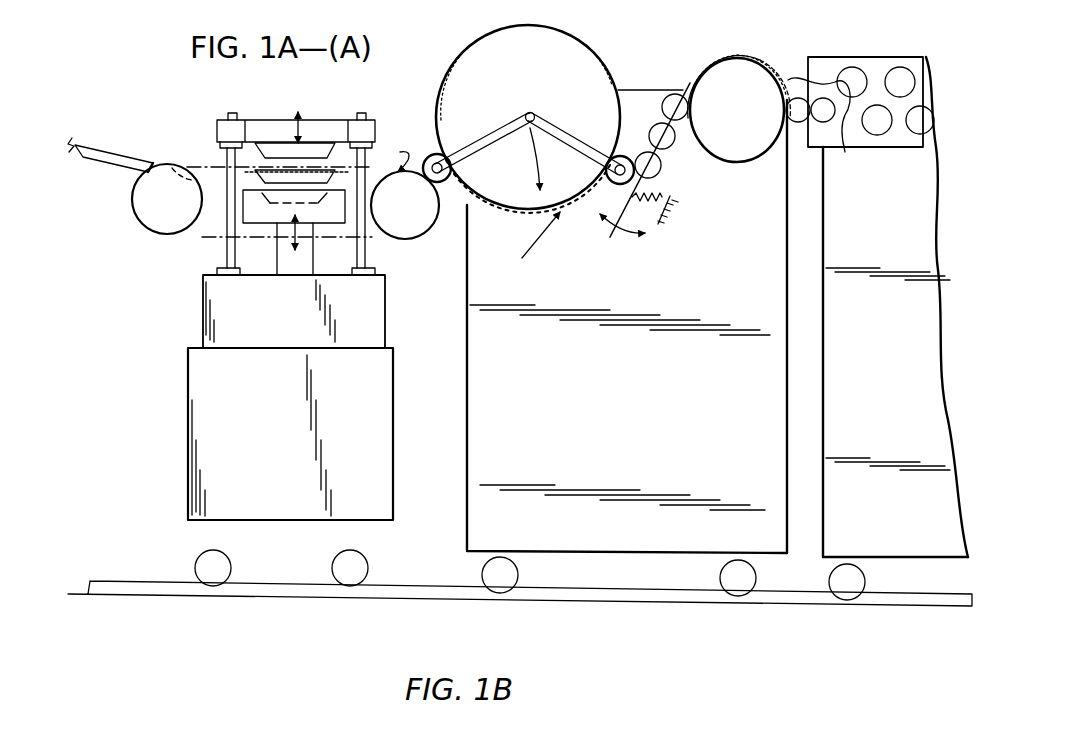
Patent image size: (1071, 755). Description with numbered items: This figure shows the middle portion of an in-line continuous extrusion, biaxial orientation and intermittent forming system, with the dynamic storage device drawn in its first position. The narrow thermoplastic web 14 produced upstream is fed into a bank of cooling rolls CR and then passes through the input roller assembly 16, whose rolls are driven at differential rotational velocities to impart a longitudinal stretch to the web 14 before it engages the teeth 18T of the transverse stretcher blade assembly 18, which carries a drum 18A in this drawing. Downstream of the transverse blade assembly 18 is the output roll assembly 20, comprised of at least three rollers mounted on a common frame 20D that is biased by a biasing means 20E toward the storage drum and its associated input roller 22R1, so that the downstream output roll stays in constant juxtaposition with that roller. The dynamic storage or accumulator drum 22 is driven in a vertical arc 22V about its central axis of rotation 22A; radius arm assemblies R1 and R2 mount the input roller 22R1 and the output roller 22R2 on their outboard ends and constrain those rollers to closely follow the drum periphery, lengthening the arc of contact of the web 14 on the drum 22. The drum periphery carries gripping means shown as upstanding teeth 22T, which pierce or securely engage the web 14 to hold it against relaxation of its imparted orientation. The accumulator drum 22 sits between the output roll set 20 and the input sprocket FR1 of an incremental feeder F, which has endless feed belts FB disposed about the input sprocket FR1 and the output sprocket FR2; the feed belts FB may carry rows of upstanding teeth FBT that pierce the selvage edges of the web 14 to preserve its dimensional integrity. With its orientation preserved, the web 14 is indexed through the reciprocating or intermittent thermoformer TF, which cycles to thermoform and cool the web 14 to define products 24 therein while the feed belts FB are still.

The web 14 is at (556, 26).
The input roller assembly 16 is at (793, 82).
The transverse stretcher blade assembly 18 is at (757, 44).
The heated drum 18A is at (745, 99).
The teeth 18T is at (770, 72).
The output roll assembly 20 is at (686, 76).
The common frame 20D is at (660, 170).
The biasing means 20E is at (648, 206).
The dynamic storage or accumulator drum 22 is at (551, 79).
The center 22A is at (535, 113).
The input roller 22R1 is at (614, 186).
The output roller 22R2 is at (444, 182).
The teeth 22T is at (528, 219).
The vertical arc 22V is at (528, 150).
The products 24 is at (126, 170).
The cooling rolls CR is at (874, 66).
The incremental feeder F is at (398, 154).
The feed belts FB is at (193, 240).
The teeth FBT is at (382, 244).
The input roller or sprocket FR1 is at (421, 219).
The output roller or sprocket FR2 is at (185, 213).
The radius arm assembly R1 is at (563, 140).
The radius arm assembly R2 is at (506, 122).
The thermoformer TF is at (216, 101).